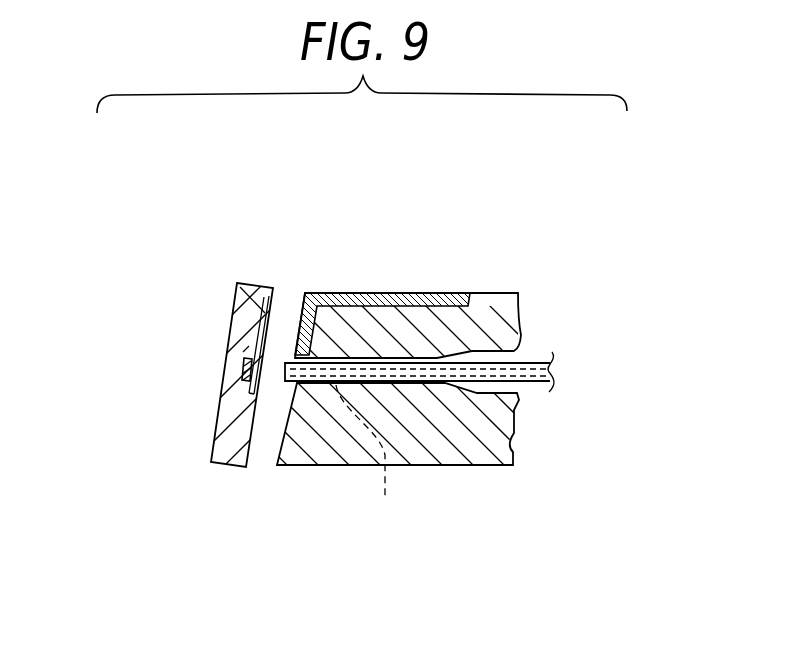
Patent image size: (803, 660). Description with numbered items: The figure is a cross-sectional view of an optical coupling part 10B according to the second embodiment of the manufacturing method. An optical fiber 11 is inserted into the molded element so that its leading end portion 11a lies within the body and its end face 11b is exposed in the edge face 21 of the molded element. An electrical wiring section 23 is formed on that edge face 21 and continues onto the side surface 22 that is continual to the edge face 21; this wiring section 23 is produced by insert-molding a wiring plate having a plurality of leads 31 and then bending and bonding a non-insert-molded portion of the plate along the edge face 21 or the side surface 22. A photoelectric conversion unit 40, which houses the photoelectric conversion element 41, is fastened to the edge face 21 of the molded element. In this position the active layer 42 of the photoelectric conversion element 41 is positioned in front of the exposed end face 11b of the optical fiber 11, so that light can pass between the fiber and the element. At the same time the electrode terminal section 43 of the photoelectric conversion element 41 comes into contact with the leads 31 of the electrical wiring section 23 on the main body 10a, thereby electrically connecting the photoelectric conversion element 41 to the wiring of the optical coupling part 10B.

The optical coupling part 10B is at (377, 357).
The main body 10a is at (360, 474).
The optical fiber 11 is at (450, 442).
The leading end portion 11a is at (371, 459).
The end face 11b is at (238, 298).
The edge face 21 is at (283, 436).
The side surface 22 is at (392, 273).
The electrical wiring section 23 is at (348, 293).
The leads 31 is at (392, 257).
The photoelectric conversion unit 40 is at (245, 384).
The photoelectric conversion element 41 is at (243, 352).
The active layer 42 is at (243, 372).
The electrode terminal section 43 is at (250, 296).